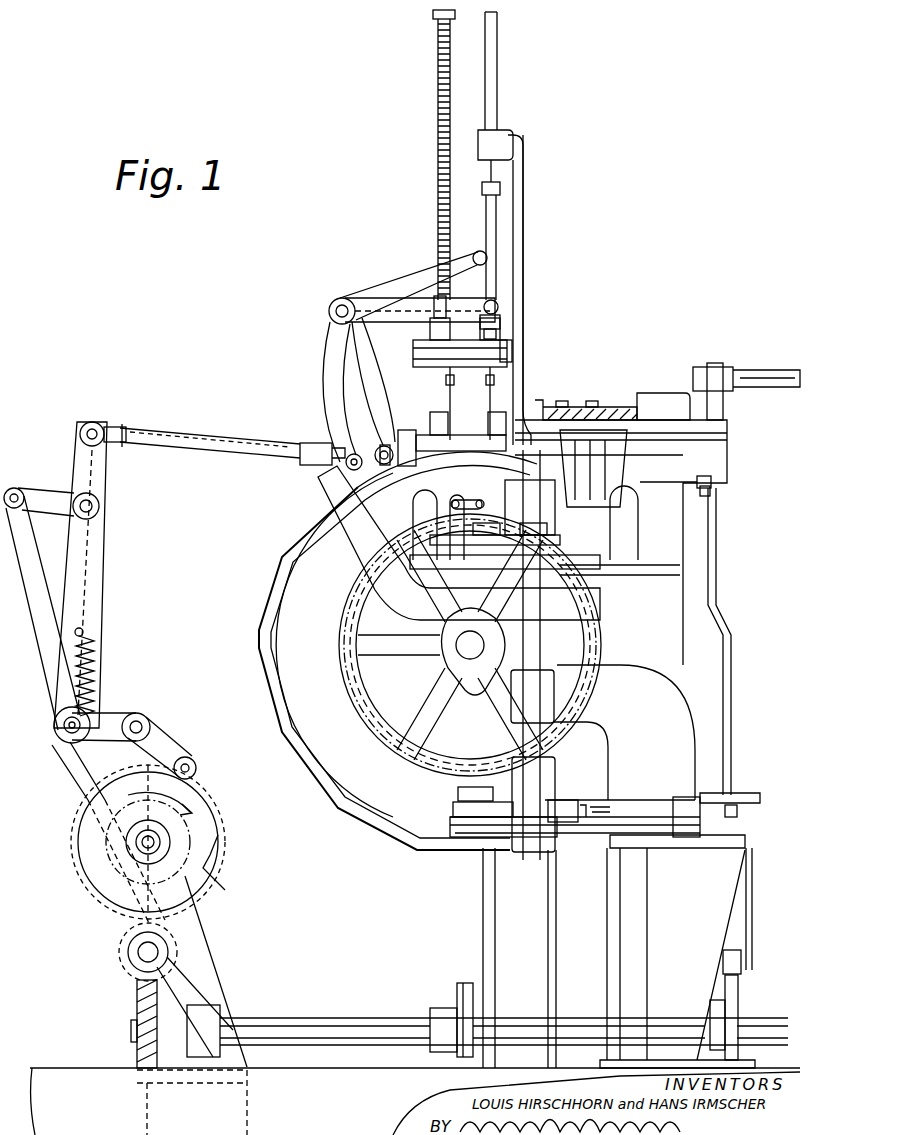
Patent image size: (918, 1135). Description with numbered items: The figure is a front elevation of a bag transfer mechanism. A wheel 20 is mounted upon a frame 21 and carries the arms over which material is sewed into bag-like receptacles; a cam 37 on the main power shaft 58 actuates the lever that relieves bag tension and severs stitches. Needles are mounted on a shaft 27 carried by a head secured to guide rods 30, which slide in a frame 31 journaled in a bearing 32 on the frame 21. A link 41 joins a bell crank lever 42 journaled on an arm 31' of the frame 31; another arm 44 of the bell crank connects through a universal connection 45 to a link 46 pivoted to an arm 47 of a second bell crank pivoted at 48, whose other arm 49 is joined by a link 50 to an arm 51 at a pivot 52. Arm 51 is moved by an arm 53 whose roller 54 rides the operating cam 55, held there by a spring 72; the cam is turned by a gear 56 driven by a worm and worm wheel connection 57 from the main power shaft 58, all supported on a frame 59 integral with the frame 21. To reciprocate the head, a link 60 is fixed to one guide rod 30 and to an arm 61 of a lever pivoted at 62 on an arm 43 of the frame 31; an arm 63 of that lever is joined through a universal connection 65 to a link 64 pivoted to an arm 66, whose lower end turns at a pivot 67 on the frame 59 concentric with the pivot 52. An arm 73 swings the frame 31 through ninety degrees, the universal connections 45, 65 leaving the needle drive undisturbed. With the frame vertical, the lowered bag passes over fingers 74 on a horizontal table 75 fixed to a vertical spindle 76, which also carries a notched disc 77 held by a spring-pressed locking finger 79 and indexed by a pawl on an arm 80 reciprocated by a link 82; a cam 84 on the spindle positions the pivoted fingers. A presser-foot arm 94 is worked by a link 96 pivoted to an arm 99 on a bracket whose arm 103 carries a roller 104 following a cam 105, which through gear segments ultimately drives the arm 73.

The wheel 20 is at (370, 822).
The frame 21 is at (620, 955).
The shaft 27 is at (474, 366).
The guide rods 30 is at (497, 78).
The frame 31 is at (534, 287).
The arm 31' is at (450, 329).
The bearing 32 is at (700, 465).
The cam 37 is at (465, 985).
The link 41 is at (500, 328).
The bell crank lever 42 is at (412, 285).
The arm 43 is at (512, 352).
The arm 44 is at (368, 376).
The universal connection 45 is at (406, 440).
The link 46 is at (242, 435).
The arm 47 is at (112, 466).
The pivot 48 is at (95, 510).
The arm 49 is at (52, 503).
The link 50 is at (32, 565).
The arm 51 is at (110, 722).
The pivot 52 is at (64, 740).
The arm 53 is at (168, 750).
The roller 54 is at (197, 764).
The operating cam 55 is at (100, 890).
The gear 56 is at (118, 940).
The worm and worm wheel connection 57 is at (140, 1000).
The main power shaft 58 is at (250, 1020).
The frame 59 is at (85, 783).
The link 60 is at (493, 222).
The arm 61 is at (370, 298).
The pivot 62 is at (332, 308).
The arm 63 is at (324, 372).
The link 64 is at (275, 447).
The universal connection 65 is at (325, 458).
The arm 66 is at (90, 586).
The pivot 67 is at (55, 738).
The spring 72 is at (90, 672).
The arm 73 is at (748, 372).
The fingers 74 is at (450, 502).
The horizontal table 75 is at (595, 562).
The vertical spindle 76 is at (540, 600).
The disc 77 is at (482, 840).
The locking finger 79 is at (580, 828).
The arm 80 is at (518, 855).
The link 82 is at (735, 796).
The cam 84 is at (524, 525).
The arm 94 is at (475, 500).
The link 96 is at (706, 496).
The arm 99 is at (718, 612).
The arm 103 is at (748, 932).
The roller 104 is at (742, 968).
The cam 105 is at (732, 1020).